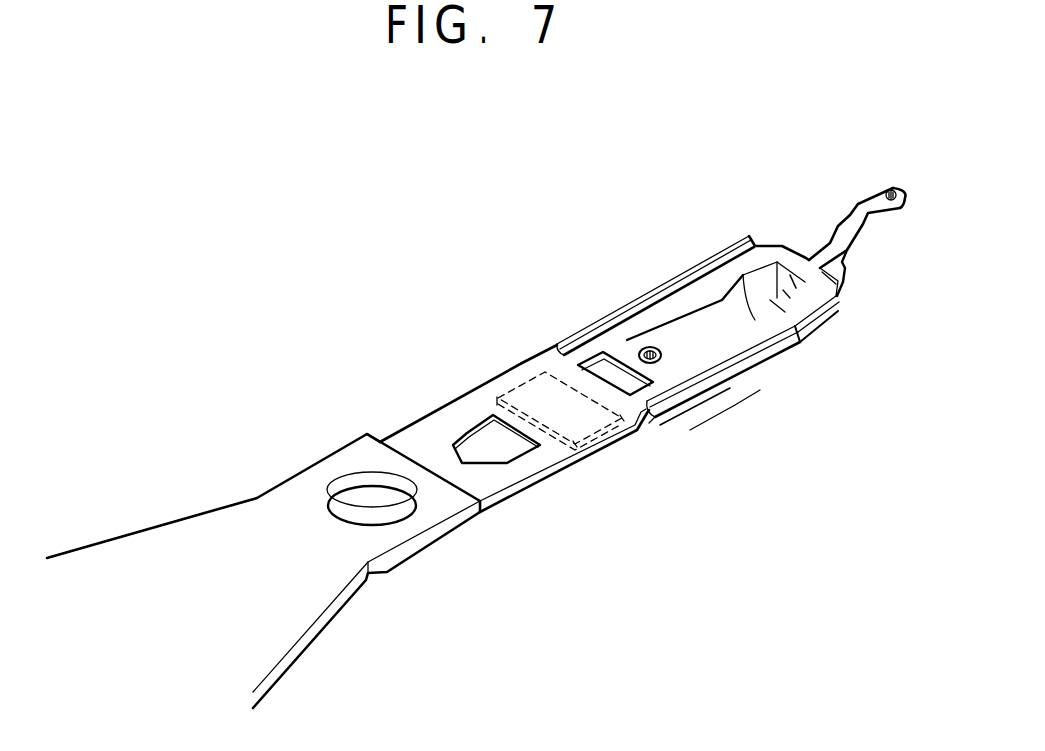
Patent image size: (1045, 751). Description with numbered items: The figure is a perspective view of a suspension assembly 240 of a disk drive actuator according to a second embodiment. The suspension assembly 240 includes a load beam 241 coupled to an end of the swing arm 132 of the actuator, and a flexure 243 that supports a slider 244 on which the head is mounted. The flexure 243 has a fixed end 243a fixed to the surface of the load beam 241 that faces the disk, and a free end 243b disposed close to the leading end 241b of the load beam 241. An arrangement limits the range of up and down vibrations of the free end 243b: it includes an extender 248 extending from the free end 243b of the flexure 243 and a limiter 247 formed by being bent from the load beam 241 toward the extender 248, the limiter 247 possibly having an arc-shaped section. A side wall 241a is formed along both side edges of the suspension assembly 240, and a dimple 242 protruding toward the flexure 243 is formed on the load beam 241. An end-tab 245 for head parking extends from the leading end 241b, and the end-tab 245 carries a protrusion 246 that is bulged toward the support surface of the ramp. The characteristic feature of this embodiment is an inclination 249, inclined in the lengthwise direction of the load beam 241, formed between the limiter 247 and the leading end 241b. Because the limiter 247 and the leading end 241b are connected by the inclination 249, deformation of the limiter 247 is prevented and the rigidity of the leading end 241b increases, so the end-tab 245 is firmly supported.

The swing arm 132 is at (183, 533).
The suspension assembly 240 is at (526, 254).
The load beam 241 is at (524, 364).
The side wall 241a is at (692, 266).
The leading end 241b is at (782, 244).
The dimple 242 is at (646, 347).
The flexure 243 is at (756, 370).
The fixed end 243a is at (592, 423).
The free end 243b is at (790, 350).
The slider 244 is at (680, 413).
The end-tab 245 is at (863, 205).
The protrusion 246 is at (897, 189).
The limiter 247 is at (838, 302).
The extender 248 is at (806, 333).
The inclination 249 is at (847, 273).